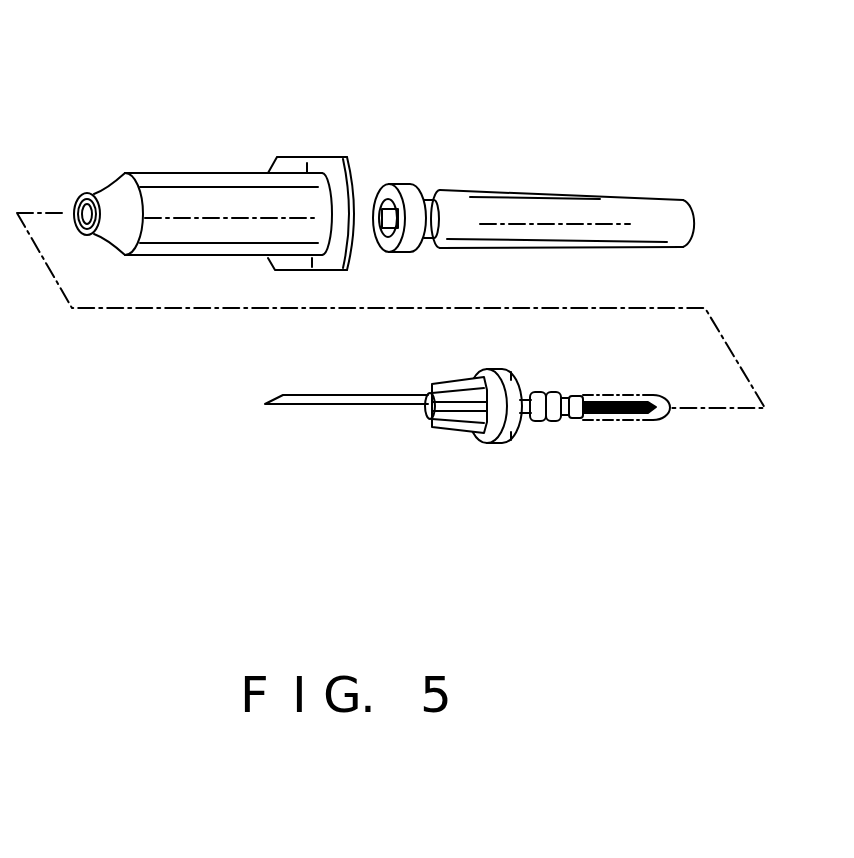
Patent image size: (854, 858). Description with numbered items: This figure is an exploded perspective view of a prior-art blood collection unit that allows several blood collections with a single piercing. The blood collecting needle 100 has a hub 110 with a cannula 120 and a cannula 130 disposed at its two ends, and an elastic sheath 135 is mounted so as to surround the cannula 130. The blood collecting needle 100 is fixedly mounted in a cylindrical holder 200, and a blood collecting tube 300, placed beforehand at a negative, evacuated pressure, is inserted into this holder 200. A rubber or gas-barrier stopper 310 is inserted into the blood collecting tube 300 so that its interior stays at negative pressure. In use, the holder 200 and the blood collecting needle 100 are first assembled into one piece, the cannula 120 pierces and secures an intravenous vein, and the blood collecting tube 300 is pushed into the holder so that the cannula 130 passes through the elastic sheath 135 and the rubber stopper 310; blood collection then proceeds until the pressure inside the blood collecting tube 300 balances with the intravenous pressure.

The blood collecting needle 100 is at (481, 447).
The hub 110 is at (500, 373).
The cannula 120 is at (352, 408).
The cannula 130 is at (632, 413).
The elastic sheath 135 is at (625, 395).
The cylindrical holder 200 is at (187, 118).
The blood collecting tube 300 is at (533, 139).
The rubber stopper 310 is at (414, 184).